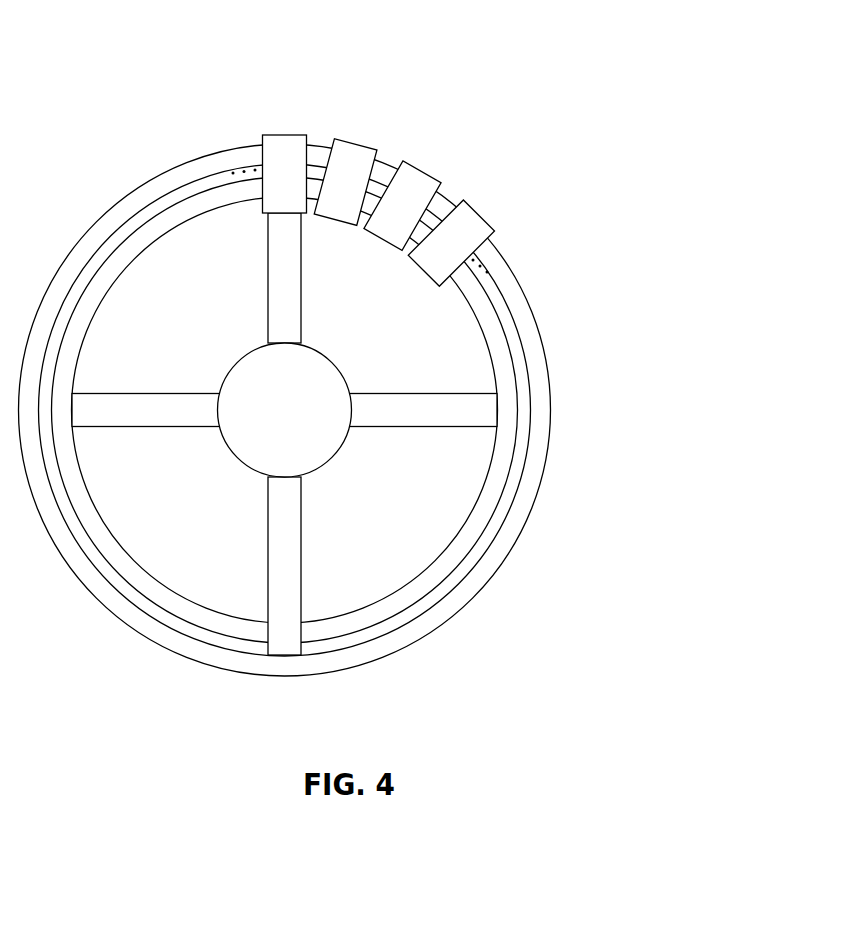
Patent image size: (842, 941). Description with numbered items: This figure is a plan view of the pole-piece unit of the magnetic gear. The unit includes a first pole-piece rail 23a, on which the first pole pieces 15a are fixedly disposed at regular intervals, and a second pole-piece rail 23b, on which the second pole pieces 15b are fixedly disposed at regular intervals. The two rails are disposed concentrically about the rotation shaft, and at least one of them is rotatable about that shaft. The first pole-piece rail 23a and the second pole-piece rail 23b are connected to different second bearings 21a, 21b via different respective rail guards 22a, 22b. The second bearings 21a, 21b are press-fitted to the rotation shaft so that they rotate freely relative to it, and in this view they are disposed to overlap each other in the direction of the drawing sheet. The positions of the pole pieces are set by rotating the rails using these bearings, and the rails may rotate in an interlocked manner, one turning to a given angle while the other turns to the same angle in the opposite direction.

The first pole pieces 15a is at (283, 143).
The second pole pieces 15b is at (353, 157).
The second bearing 21a is at (446, 435).
The second bearing 21b is at (305, 442).
The rail guard 22a is at (288, 317).
The rail guard 22b is at (125, 410).
The first pole-piece rail 23a is at (155, 232).
The second pole-piece rail 23b is at (183, 173).